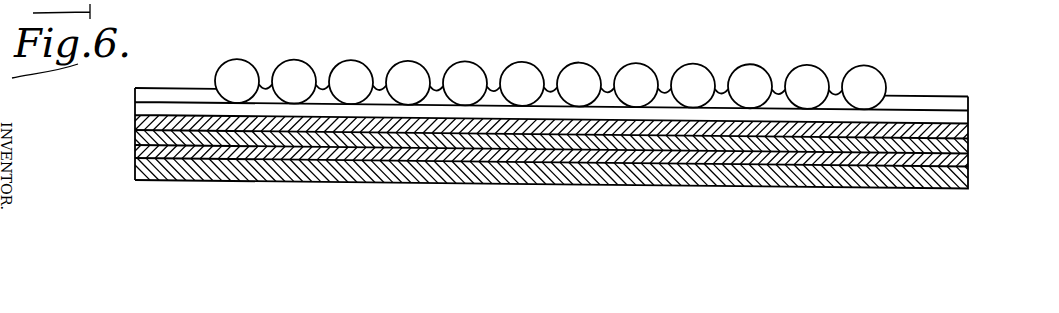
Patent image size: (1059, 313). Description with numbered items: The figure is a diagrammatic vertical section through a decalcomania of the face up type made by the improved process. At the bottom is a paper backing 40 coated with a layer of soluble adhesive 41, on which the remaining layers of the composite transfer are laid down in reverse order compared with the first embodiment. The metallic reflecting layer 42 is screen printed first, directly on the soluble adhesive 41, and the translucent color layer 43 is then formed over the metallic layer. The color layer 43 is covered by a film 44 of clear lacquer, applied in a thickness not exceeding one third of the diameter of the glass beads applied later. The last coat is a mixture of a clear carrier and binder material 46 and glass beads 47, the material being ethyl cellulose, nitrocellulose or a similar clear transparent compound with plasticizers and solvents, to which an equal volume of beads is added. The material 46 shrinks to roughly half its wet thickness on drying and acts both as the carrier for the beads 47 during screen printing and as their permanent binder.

The paper backing 40 is at (299, 245).
The soluble adhesive layer 41 is at (553, 155).
The metallic reflecting layer 42 is at (838, 142).
The translucent color layer 43 is at (1039, 130).
The clear lacquer film 44 is at (250, 43).
The clear carrier and binder material 46 is at (632, 45).
The glass beads 47 is at (860, 80).